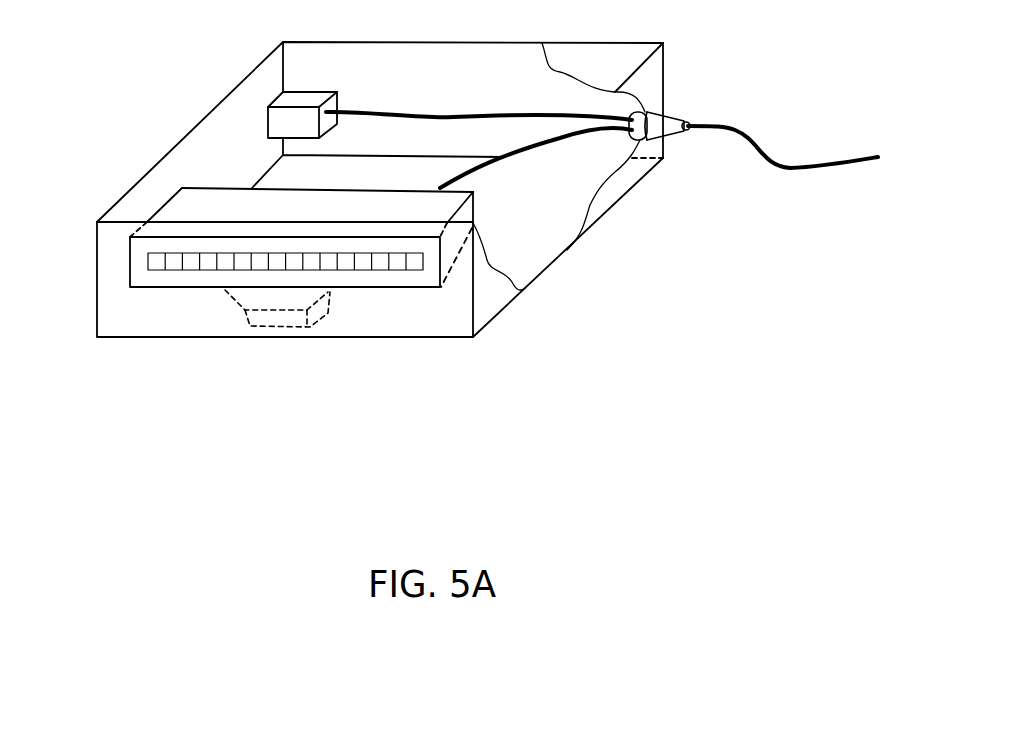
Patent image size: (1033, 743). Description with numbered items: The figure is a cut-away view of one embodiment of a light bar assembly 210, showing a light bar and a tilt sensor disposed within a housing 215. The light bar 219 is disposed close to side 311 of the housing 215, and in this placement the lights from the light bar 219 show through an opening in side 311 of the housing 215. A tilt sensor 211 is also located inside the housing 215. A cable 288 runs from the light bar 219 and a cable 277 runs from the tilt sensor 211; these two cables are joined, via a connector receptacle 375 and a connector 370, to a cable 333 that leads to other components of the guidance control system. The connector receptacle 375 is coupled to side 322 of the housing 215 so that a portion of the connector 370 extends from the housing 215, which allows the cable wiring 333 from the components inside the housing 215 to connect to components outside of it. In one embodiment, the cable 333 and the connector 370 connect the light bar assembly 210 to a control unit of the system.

The light bar assembly 210 is at (448, 222).
The tilt sensor 211 is at (303, 100).
The housing 215 is at (300, 339).
The light bar 219 is at (130, 263).
The cable 277 is at (442, 112).
The cable 288 is at (472, 172).
The side 311 is at (128, 302).
The side 322 is at (497, 293).
The cable wiring 333 is at (818, 167).
The connector 370 is at (662, 122).
The connector receptacle 375 is at (638, 137).